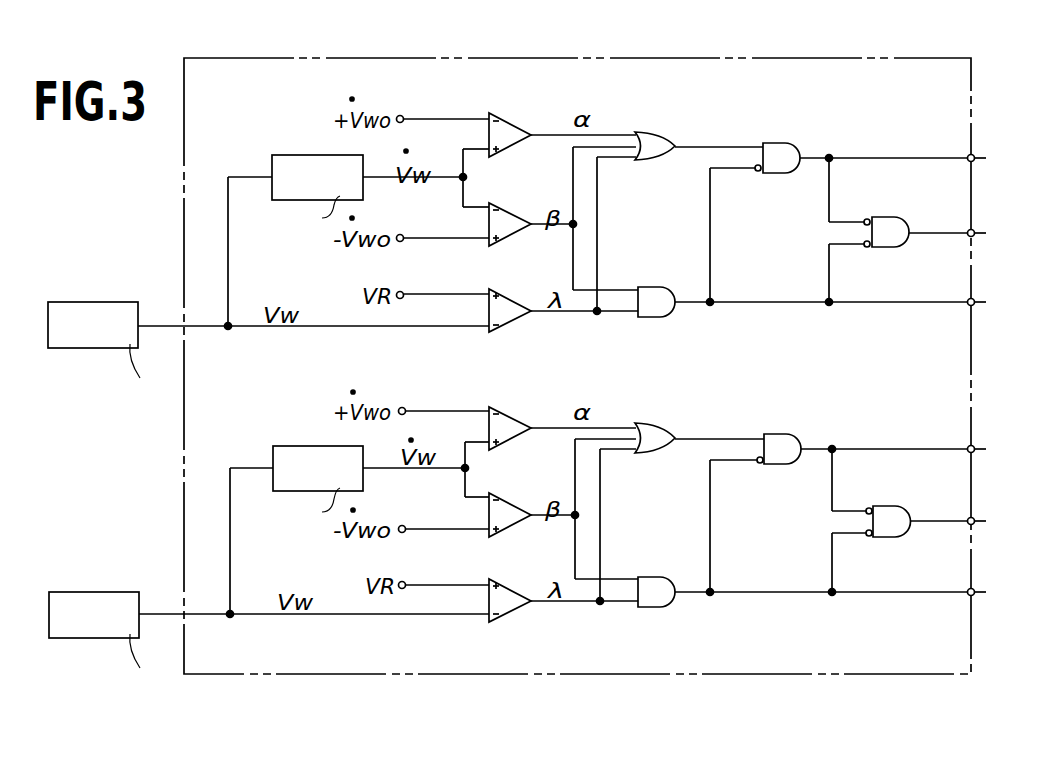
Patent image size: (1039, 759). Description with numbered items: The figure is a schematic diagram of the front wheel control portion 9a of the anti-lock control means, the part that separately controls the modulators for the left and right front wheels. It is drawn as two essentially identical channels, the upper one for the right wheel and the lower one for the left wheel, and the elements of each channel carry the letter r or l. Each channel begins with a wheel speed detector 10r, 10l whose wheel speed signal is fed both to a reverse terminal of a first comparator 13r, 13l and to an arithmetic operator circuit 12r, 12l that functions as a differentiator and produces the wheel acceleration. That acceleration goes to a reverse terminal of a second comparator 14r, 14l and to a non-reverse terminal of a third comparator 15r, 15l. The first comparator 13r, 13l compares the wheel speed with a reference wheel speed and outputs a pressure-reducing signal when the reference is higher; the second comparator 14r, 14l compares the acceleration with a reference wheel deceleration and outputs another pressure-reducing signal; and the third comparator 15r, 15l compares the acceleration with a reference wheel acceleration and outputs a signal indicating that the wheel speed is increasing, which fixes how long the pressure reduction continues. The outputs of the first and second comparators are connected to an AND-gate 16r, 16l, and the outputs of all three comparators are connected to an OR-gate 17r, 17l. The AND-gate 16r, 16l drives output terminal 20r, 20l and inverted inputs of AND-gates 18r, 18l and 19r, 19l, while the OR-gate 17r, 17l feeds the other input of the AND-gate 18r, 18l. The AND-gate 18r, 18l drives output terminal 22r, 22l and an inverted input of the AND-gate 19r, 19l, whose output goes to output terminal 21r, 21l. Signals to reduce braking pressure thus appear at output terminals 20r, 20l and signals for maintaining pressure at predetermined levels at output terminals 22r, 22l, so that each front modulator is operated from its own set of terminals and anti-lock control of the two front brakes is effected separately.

The front wheel control portion 9a is at (362, 57).
The detector 10r is at (83, 311).
The detector 10l is at (83, 601).
The arithmetic operator circuit 12r is at (291, 163).
The arithmetic operator circuit 12l is at (293, 453).
The first comparator 13r is at (503, 294).
The first comparator 13l is at (503, 585).
The second comparator 14r is at (508, 213).
The second comparator 14l is at (508, 502).
The third comparator 15r is at (509, 120).
The third comparator 15l is at (509, 414).
The AND-gate 16r is at (650, 286).
The AND-gate 16l is at (652, 576).
The OR-gate 17r is at (648, 132).
The OR-gate 17l is at (651, 422).
The AND-gate 18r is at (773, 143).
The AND-gate 18l is at (777, 434).
The AND-gate 19r is at (886, 216).
The AND-gate 19l is at (887, 506).
The output terminal 20r is at (999, 306).
The output terminal 20l is at (998, 595).
The output terminal 21r is at (998, 236).
The output terminal 21l is at (997, 524).
The output terminal 22r is at (999, 162).
The output terminal 22l is at (998, 451).